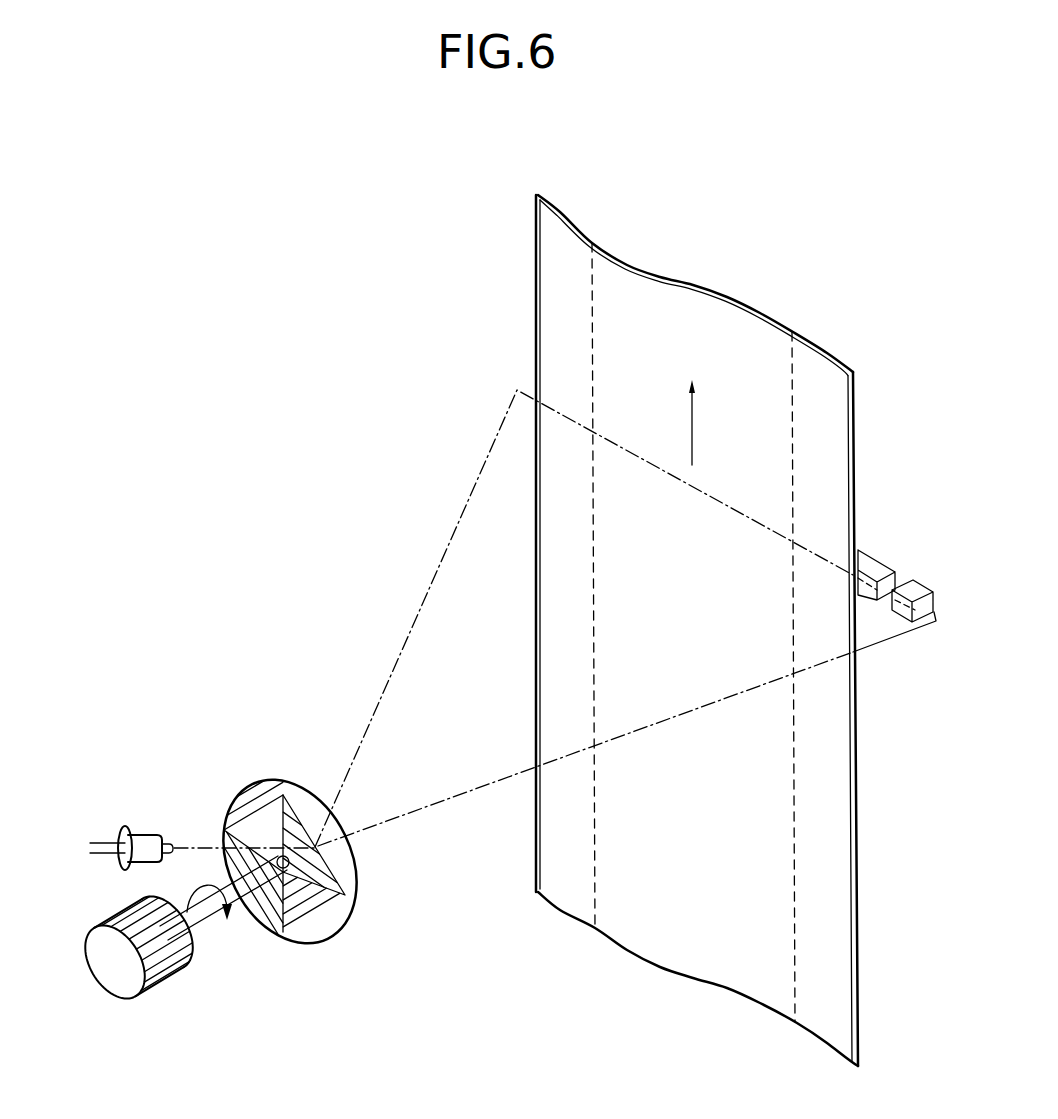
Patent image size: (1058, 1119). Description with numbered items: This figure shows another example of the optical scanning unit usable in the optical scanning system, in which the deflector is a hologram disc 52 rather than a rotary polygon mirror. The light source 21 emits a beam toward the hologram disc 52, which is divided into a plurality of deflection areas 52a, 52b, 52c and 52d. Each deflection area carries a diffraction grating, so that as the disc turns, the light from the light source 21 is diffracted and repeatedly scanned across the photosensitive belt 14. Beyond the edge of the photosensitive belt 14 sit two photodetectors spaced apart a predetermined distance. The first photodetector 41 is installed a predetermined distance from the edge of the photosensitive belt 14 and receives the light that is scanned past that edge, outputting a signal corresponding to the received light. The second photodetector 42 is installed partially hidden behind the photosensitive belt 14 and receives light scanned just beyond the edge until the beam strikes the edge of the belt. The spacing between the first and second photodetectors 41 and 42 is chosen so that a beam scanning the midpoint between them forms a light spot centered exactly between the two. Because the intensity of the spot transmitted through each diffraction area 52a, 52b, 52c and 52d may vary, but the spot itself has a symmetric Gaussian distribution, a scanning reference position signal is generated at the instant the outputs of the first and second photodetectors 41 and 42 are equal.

The photosensitive belt 14 is at (855, 398).
The light source 21 is at (148, 837).
The first photodetector 41 is at (922, 590).
The second photodetector 42 is at (879, 558).
The hologram disc 52 is at (283, 781).
The deflection area 52a is at (240, 808).
The deflection area 52b is at (353, 888).
The deflection area 52c is at (330, 917).
The deflection area 52d is at (273, 907).